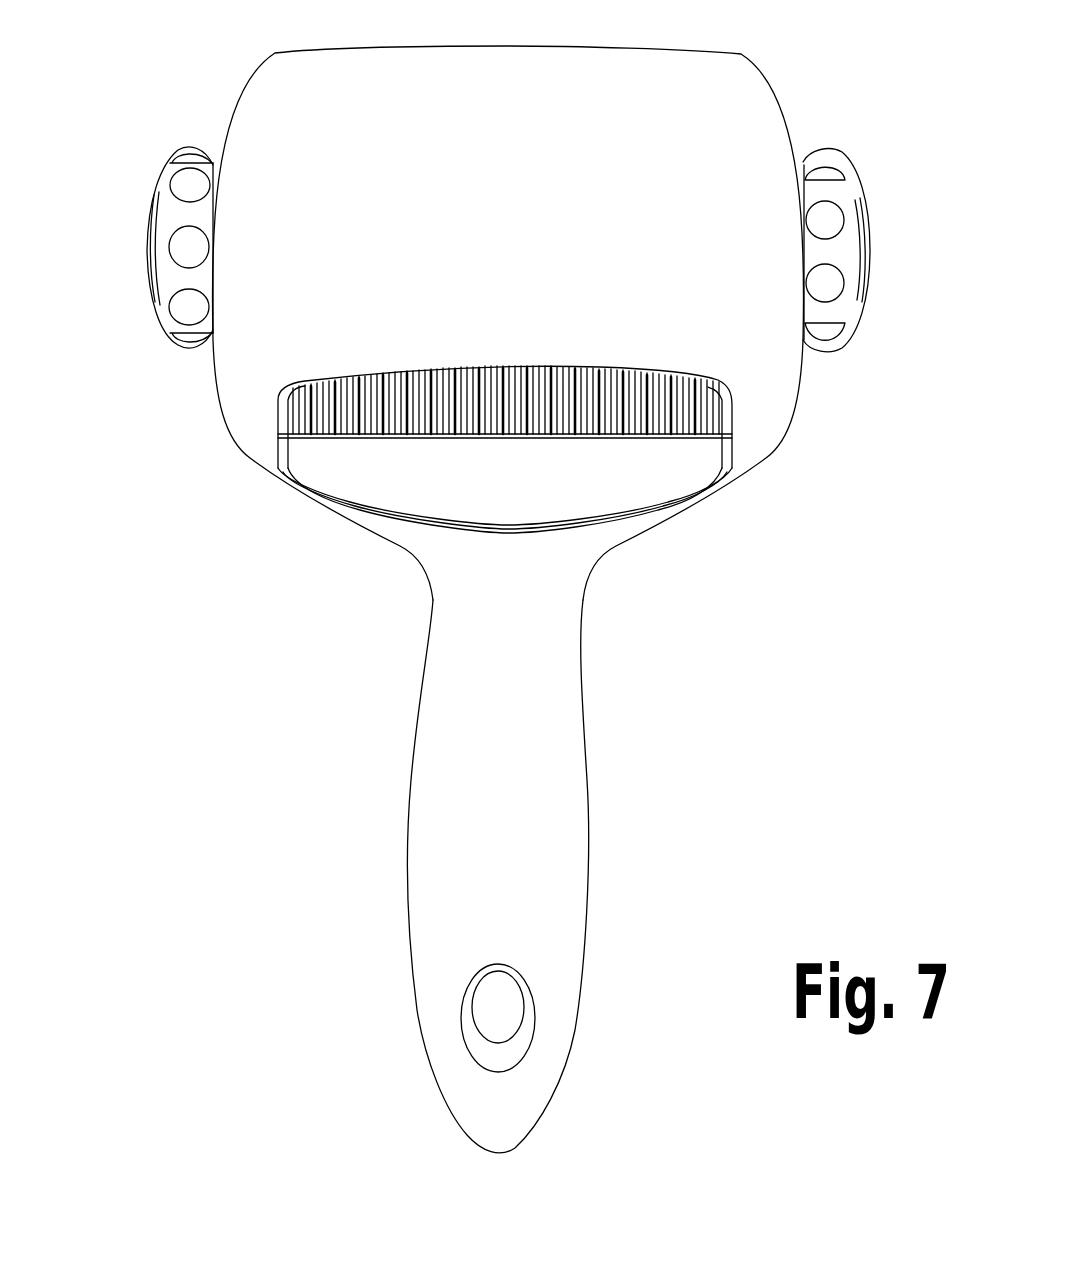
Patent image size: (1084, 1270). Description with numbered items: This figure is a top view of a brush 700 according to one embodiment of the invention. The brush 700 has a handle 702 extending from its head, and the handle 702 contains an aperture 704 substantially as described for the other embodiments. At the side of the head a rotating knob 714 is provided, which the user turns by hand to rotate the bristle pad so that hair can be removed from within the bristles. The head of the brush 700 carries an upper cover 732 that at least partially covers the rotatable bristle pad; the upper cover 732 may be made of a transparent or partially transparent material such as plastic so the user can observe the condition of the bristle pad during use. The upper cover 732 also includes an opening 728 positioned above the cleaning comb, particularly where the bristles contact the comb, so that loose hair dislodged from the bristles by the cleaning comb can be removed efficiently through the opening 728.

The brush 700 is at (190, 79).
The handle 702 is at (572, 788).
The aperture 704 is at (510, 1015).
The rotating knob 714 is at (847, 190).
The opening 728 is at (678, 473).
The upper cover 732 is at (690, 98).